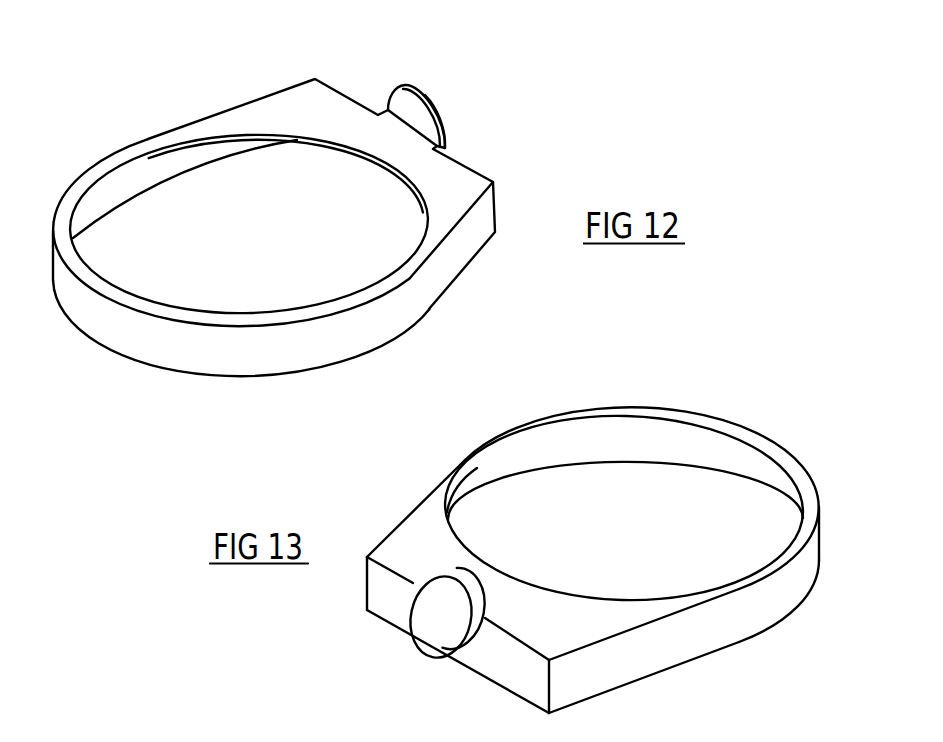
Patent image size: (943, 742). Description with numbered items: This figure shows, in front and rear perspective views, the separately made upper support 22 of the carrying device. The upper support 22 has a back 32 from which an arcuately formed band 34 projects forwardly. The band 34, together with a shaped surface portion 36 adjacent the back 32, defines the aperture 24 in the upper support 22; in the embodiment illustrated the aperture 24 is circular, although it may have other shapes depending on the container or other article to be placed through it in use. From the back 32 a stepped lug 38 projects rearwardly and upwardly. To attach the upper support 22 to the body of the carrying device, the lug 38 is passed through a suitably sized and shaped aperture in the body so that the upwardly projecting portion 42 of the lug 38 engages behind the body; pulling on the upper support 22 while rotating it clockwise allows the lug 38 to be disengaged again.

In FIG. 12, the upper support 22 is at (306, 237).
In FIG. 12, the aperture 24 is at (195, 283).
In FIG. 13, the back 32 is at (383, 598).
In FIG. 12, the arcuately formed band 34 is at (280, 353).
In FIG. 13, the arcuately formed band 34 is at (692, 418).
In FIG. 12, the shaped surface portion 36 is at (473, 178).
In FIG. 12, the stepped lug 38 is at (448, 117).
In FIG. 13, the stepped lug 38 is at (442, 630).
In FIG. 12, the upwardly projecting portion 42 is at (423, 90).